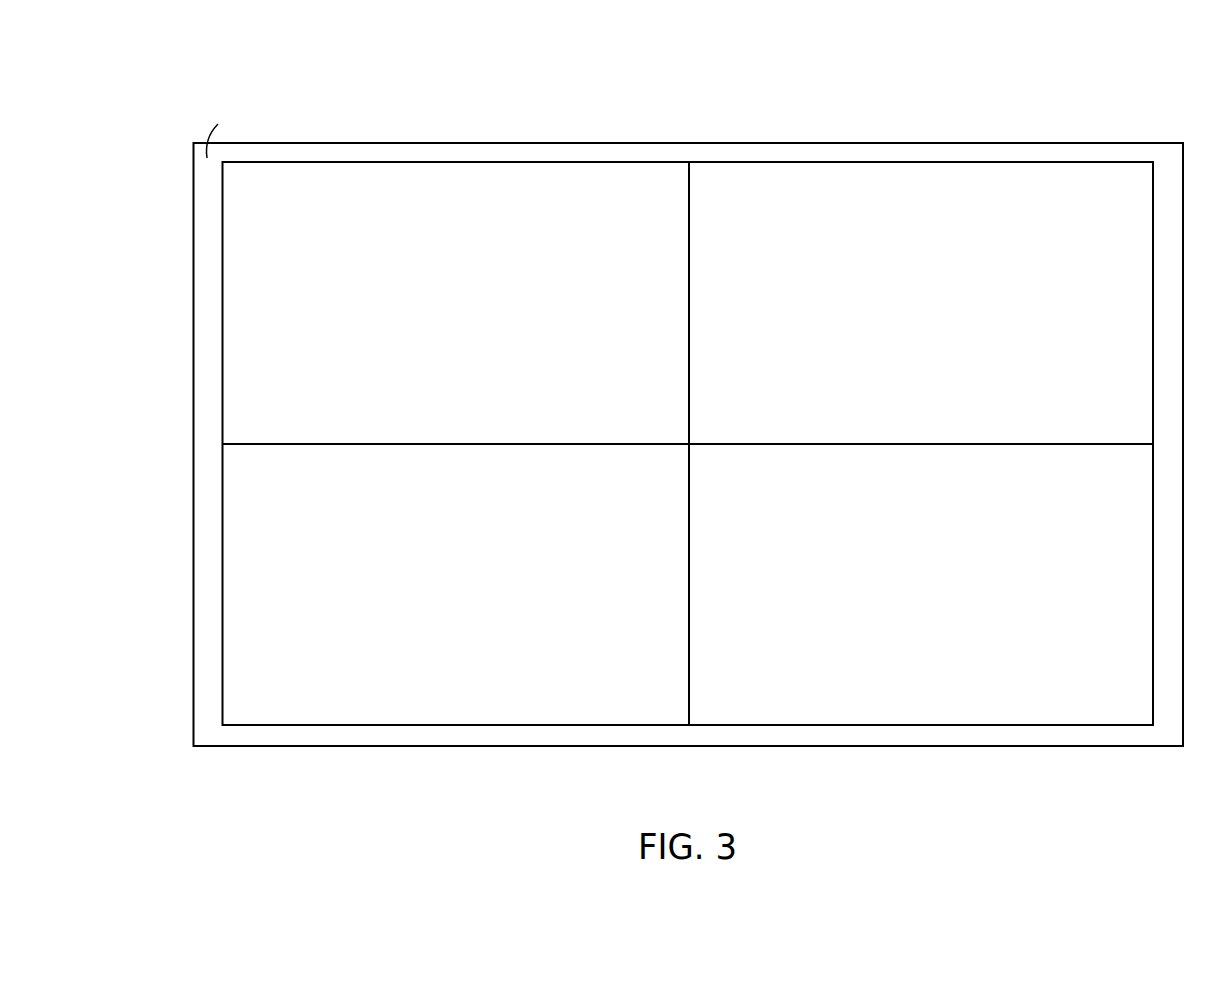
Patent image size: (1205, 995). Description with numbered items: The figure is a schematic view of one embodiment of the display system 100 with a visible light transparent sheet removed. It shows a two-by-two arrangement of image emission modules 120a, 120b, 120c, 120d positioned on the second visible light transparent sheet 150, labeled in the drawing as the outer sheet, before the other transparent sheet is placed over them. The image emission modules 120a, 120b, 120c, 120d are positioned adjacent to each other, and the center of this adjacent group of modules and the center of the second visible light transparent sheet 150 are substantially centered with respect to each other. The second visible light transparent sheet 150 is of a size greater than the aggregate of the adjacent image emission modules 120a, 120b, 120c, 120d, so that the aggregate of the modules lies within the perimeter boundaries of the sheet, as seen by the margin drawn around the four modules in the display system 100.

The display system 100 is at (158, 45).
The second visible light transparent sheet 150 is at (193, 217).
The image emission module 120a is at (449, 331).
The image emission module 120b is at (929, 331).
The image emission module 120c is at (449, 582).
The image emission module 120d is at (929, 582).